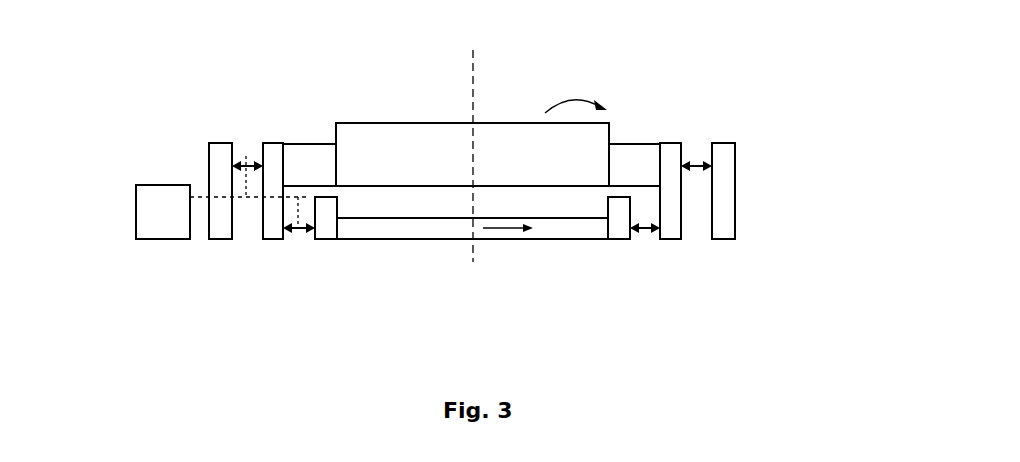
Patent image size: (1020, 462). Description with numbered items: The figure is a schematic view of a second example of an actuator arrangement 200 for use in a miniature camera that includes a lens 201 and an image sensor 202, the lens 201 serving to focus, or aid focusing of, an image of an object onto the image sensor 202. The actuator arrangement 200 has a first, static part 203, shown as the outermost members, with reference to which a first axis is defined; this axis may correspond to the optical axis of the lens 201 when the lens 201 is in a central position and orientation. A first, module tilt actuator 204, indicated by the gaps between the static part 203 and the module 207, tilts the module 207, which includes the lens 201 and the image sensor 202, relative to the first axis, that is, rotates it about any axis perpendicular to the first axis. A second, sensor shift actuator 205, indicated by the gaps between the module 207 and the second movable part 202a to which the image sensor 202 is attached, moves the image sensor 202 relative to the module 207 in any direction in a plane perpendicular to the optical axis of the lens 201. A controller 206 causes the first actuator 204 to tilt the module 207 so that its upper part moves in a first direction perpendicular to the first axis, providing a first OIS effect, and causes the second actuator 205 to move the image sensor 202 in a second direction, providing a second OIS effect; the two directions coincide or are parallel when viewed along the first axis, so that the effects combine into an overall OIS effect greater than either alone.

The actuator arrangement 200 is at (140, 103).
The lens 201 is at (398, 134).
The image sensor 202 is at (465, 268).
The second movable part 202a is at (321, 241).
The static part 203 is at (209, 176).
The first actuator 204 is at (246, 157).
The second actuator 205 is at (300, 240).
The controller 206 is at (136, 226).
The module 207 is at (269, 143).